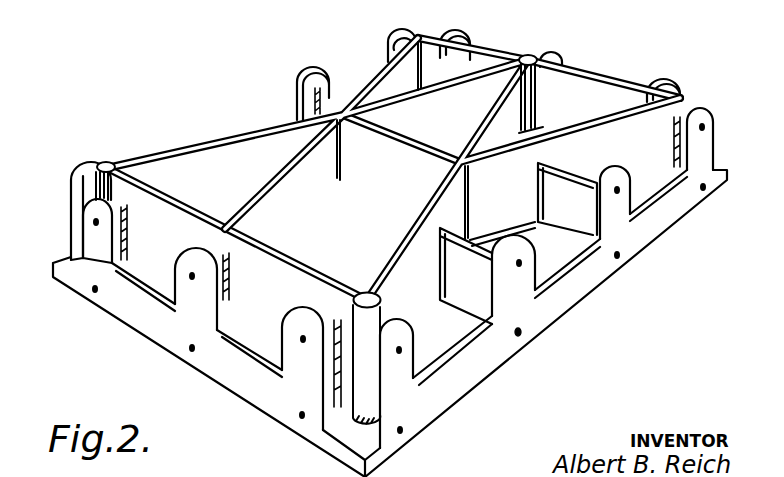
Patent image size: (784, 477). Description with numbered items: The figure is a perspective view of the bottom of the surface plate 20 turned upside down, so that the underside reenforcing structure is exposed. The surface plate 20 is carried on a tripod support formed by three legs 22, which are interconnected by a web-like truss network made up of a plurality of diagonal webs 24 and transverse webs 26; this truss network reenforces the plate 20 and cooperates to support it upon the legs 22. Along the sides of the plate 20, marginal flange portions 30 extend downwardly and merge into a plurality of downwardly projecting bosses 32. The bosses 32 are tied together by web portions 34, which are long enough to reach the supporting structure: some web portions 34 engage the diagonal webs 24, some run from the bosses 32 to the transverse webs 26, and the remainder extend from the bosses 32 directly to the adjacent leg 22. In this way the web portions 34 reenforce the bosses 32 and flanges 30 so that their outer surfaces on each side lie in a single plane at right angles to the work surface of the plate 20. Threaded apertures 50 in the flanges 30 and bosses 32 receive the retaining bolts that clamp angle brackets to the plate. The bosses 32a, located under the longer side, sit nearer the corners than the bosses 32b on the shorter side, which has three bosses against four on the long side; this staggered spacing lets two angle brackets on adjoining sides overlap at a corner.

The surface plate 20 is at (720, 168).
The legs 22 is at (530, 54).
The diagonal webs 24 is at (370, 83).
The transverse webs 26 is at (489, 58).
The marginal flange portions 30 is at (563, 277).
The downwardly projecting bosses 32 is at (309, 71).
The bosses 32a is at (706, 123).
The bosses 32b is at (112, 226).
The web portions 34 is at (572, 187).
The threaded apertures 50 is at (523, 334).